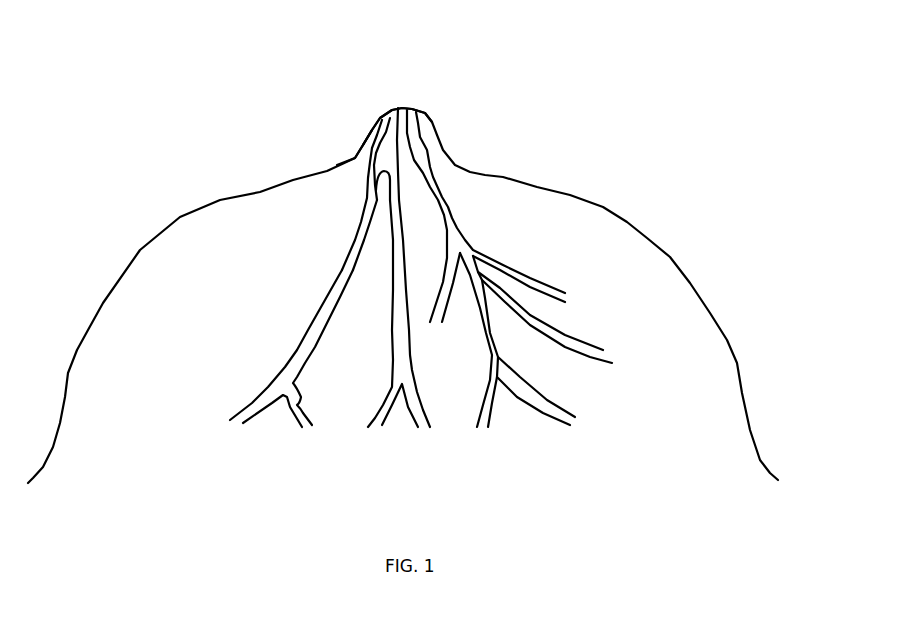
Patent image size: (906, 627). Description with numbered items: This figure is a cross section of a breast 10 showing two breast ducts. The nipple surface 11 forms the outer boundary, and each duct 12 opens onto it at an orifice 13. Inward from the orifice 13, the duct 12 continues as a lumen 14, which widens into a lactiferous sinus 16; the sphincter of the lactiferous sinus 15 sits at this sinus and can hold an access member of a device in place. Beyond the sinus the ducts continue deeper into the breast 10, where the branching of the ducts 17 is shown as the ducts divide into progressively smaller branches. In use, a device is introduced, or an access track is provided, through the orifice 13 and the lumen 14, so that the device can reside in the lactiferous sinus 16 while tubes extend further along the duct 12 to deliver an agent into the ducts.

The breast 10 is at (670, 221).
The nipple surface 11 is at (435, 132).
The duct 12 is at (361, 222).
The orifice 13 is at (390, 109).
The lumen 14 is at (400, 125).
The sphincter of the lactiferous sinus 15 is at (378, 131).
The lactiferous sinus 16 is at (367, 148).
The left anterior descending artery 17 is at (289, 350).